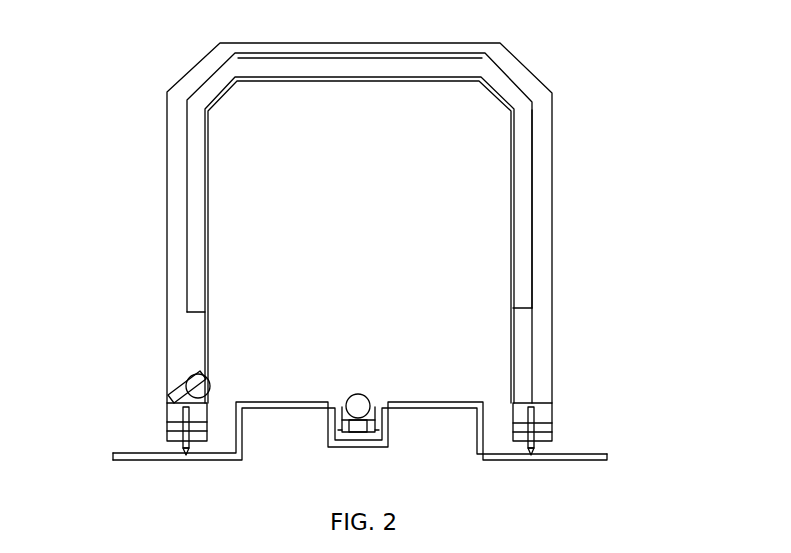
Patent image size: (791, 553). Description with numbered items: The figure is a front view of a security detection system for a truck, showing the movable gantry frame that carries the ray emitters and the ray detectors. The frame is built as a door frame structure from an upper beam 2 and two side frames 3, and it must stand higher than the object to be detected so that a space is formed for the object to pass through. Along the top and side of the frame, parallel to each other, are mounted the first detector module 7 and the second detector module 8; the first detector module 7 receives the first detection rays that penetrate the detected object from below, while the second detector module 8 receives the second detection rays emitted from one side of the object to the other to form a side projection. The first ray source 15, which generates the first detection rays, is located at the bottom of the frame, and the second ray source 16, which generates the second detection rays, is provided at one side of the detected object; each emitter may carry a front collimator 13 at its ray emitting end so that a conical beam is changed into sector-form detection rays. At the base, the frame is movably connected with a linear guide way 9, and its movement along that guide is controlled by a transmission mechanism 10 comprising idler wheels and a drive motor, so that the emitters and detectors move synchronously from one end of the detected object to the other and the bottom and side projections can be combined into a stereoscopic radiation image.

The upper beam 2 is at (359, 240).
The side frame 3 is at (402, 223).
The first detector module 7 is at (579, 209).
The second detector module 8 is at (397, 338).
The linear guide way 9 is at (346, 413).
The transmission mechanism 10 is at (318, 390).
The front collimator 13 is at (278, 365).
The first ray source 15 is at (380, 388).
The second ray source 16 is at (145, 343).